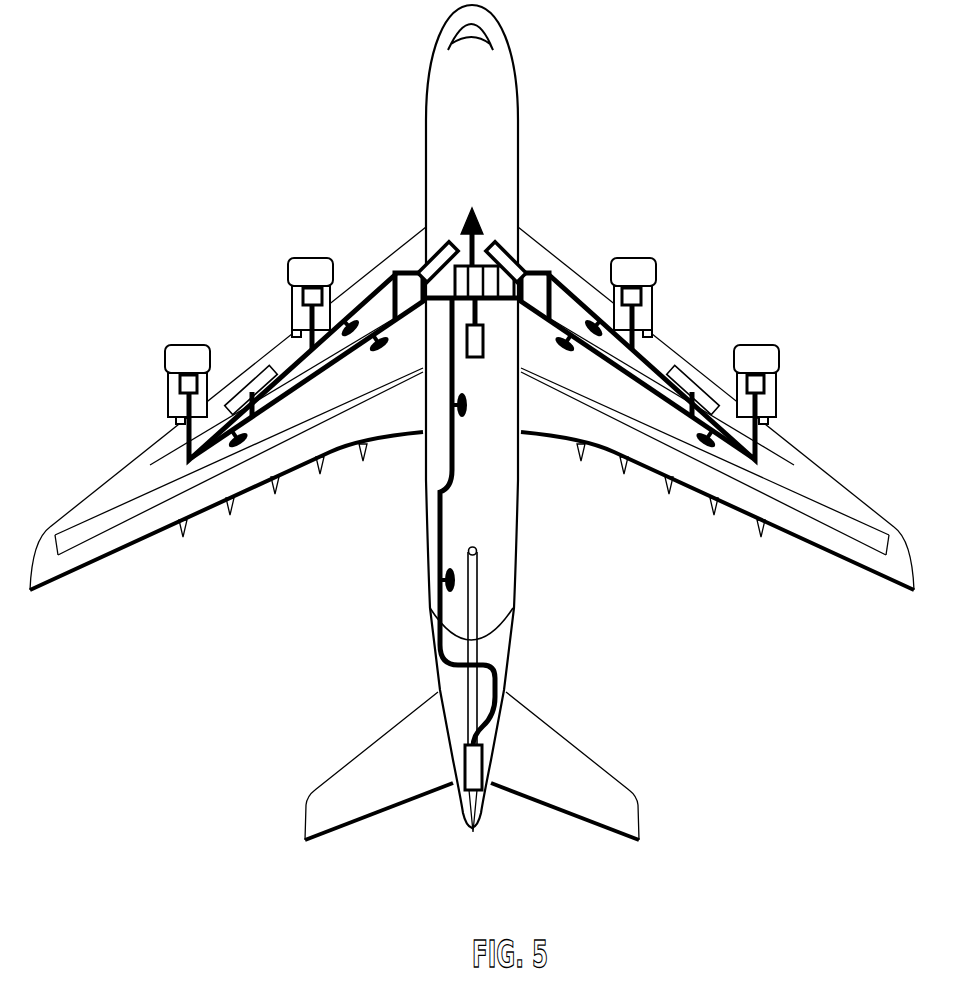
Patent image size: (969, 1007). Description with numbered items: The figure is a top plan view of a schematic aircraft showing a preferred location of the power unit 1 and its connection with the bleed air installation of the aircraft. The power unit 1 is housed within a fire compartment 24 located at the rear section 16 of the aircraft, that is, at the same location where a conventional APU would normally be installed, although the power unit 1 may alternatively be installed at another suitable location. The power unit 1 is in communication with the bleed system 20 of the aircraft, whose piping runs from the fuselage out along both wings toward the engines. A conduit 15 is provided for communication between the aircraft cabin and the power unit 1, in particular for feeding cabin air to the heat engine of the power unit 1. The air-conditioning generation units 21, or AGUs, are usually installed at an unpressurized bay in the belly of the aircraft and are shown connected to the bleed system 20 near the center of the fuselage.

The power unit 1 is at (500, 758).
The conduit 15 is at (478, 592).
The rear section 16 is at (465, 788).
The bleed system 20 is at (640, 362).
The air-conditioning generation units 21 is at (443, 260).
The fire compartment 24 is at (462, 727).